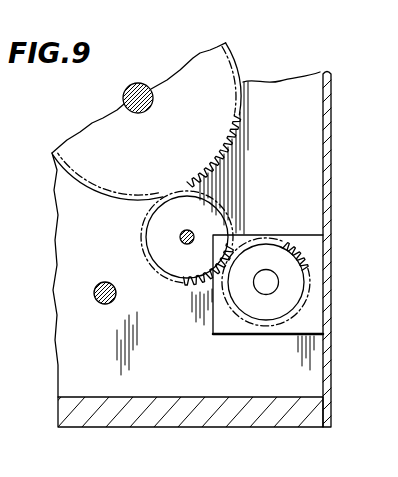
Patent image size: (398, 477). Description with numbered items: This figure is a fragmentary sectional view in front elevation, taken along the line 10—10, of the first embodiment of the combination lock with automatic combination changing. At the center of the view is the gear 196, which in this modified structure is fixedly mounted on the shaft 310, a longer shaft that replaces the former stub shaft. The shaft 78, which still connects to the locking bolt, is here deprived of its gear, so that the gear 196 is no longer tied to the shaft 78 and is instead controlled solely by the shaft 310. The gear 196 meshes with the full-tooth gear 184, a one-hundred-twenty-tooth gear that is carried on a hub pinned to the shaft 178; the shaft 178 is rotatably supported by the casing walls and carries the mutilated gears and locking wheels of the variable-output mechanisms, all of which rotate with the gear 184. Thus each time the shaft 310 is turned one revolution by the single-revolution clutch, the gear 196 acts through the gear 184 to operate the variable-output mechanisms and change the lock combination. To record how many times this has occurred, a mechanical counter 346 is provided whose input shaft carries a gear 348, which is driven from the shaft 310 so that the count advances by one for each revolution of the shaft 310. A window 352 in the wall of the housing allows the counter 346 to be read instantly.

The section line 10- 10 is at (319, 72).
The shaft 78 is at (94, 300).
The shaft 178 is at (146, 82).
The full-tooth gear 184 is at (238, 131).
The gear 196 is at (142, 253).
The shaft 310 is at (180, 236).
The mechanical counter 346 is at (246, 334).
The gear 348 is at (282, 334).
The window 352 is at (329, 283).